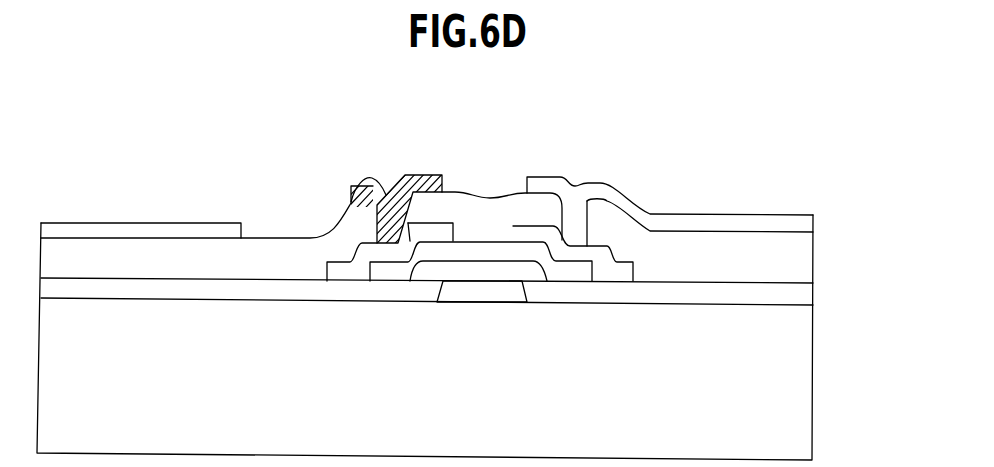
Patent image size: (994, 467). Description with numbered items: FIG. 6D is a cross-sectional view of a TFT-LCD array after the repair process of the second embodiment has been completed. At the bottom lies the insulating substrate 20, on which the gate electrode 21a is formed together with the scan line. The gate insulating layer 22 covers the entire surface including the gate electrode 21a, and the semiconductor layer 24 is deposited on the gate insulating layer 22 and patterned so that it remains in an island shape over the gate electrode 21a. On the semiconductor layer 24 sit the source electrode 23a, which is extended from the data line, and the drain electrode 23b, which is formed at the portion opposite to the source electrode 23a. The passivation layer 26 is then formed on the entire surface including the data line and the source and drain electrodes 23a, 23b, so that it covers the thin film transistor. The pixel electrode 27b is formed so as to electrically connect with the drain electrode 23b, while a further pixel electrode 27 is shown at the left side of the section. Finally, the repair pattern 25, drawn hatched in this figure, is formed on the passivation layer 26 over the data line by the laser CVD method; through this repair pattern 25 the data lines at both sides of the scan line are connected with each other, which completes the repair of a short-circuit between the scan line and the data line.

The insulating substrate 20 is at (803, 389).
The gate electrode 21a is at (481, 295).
The gate insulating layer 22 is at (803, 297).
The source electrode 23a is at (438, 232).
The drain electrode 23b is at (622, 265).
The semiconductor layer 24 is at (572, 278).
The repair pattern 25 is at (389, 195).
The passivation layer 26 is at (803, 262).
The pixel electrode 27 is at (92, 228).
The pixel electrode 27b is at (803, 224).